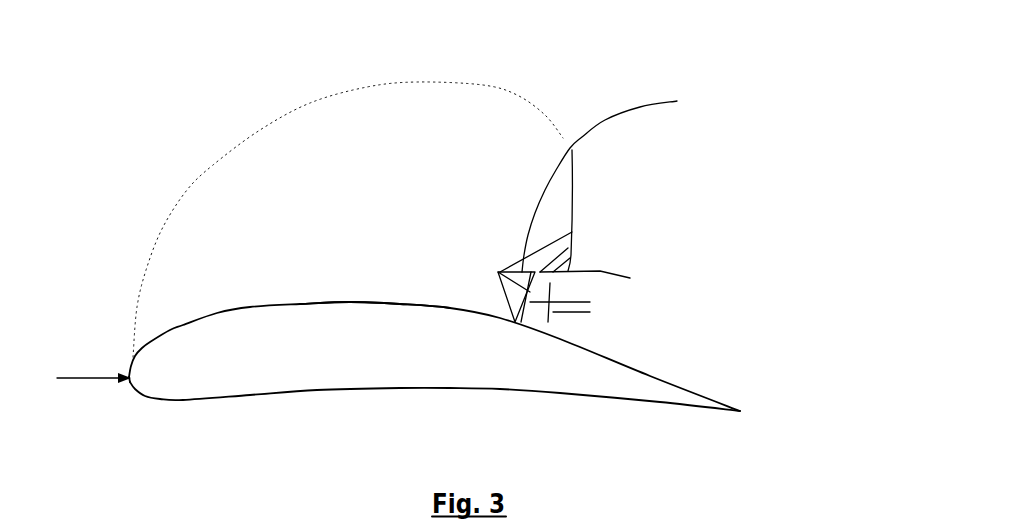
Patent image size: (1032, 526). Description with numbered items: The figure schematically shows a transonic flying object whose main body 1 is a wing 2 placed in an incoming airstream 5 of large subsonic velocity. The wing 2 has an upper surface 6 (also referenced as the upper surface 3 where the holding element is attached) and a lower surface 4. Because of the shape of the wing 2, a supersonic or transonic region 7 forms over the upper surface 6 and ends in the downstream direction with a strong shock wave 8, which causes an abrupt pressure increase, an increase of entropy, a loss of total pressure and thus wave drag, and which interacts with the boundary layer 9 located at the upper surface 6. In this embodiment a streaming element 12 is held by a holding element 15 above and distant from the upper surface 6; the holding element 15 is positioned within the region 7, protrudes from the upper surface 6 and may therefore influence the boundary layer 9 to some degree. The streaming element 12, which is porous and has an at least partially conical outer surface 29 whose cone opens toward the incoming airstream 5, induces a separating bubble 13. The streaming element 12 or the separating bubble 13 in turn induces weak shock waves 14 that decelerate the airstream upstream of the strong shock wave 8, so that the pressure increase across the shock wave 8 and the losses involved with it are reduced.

The main body 1 is at (434, 350).
The wing 2 is at (434, 350).
The upper surface 3 is at (434, 322).
The lower surface 4 is at (293, 391).
The airstream 5 is at (92, 378).
The upper surface 6 is at (279, 305).
The supersonic or transonic region 7 is at (297, 150).
The shock wave 8 is at (573, 170).
The boundary layer 9 is at (404, 305).
The streaming element 12 is at (527, 270).
The separating bubble 13 is at (595, 277).
The weak shock waves 14 is at (553, 312).
The holding element 15 is at (552, 303).
The conical outer surface 29 is at (613, 178).